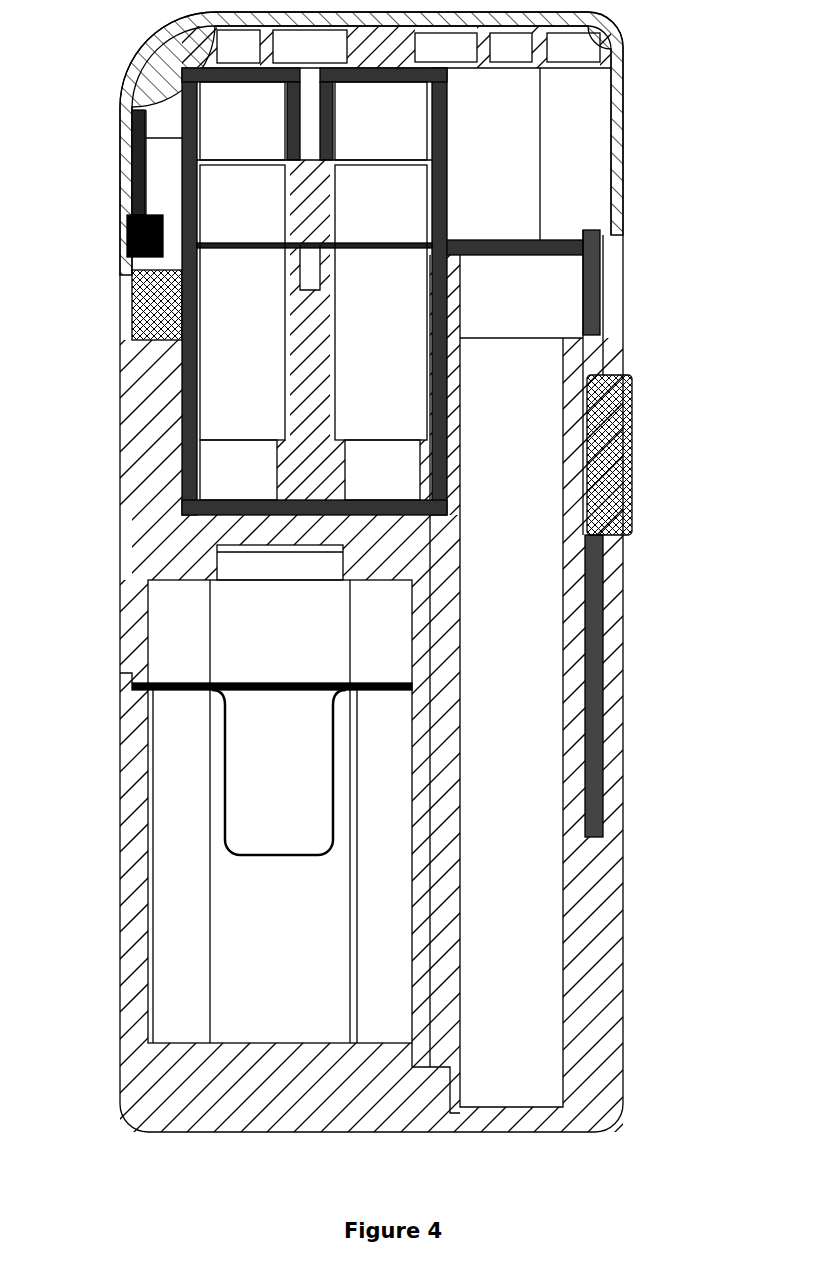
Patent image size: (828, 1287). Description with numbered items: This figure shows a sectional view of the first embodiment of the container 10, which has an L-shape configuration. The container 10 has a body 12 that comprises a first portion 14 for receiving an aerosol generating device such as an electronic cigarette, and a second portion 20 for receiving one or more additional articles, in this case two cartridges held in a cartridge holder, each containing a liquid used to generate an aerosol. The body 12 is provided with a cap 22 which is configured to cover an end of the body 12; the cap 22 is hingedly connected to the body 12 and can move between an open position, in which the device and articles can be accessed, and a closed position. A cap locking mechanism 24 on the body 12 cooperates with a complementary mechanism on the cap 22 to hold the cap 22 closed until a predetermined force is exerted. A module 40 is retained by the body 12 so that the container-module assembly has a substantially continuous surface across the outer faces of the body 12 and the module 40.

The container 10 is at (672, 165).
The body 12 is at (622, 930).
The first portion 14 is at (567, 420).
The second portion 20 is at (180, 503).
The cap 22 is at (134, 143).
The cap locking mechanism 24 is at (603, 240).
The module 40 is at (120, 868).